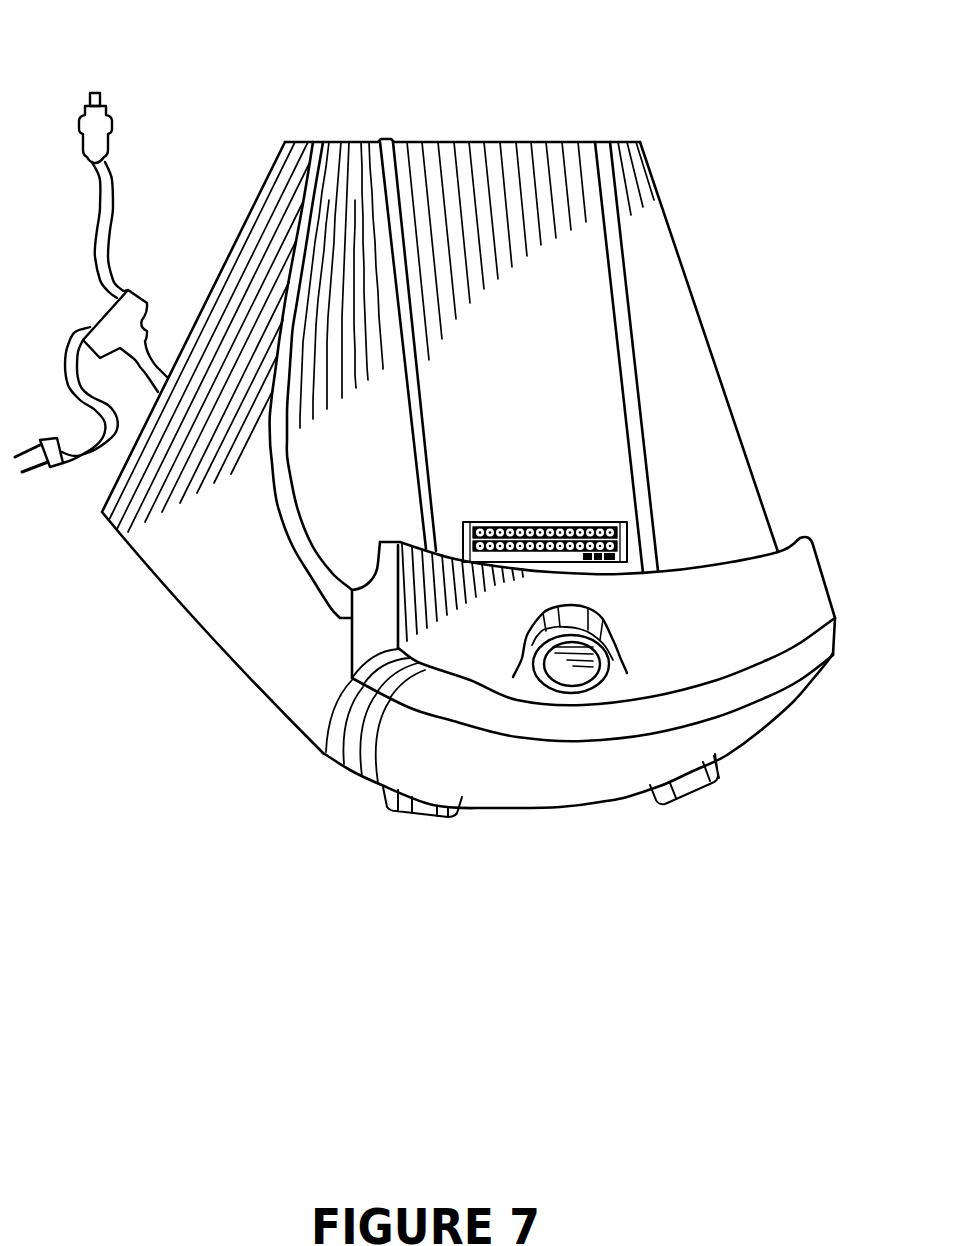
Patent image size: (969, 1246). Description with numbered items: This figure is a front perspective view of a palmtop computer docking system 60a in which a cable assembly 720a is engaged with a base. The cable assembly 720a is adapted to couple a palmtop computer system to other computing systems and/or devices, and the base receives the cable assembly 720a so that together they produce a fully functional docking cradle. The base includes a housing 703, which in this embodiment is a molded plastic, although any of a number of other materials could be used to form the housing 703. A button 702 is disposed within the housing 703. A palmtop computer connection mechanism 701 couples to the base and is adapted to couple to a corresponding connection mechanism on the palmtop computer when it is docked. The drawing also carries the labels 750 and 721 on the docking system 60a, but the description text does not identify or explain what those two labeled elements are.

The palmtop computer docking system 60a is at (70, 40).
The housing base unit 750 is at (188, 649).
The housing 703 is at (733, 463).
The palmtop computer connection mechanism 701 is at (545, 520).
The button 702 is at (577, 672).
The power cable 721 is at (112, 222).
The cable assembly 720a is at (158, 280).